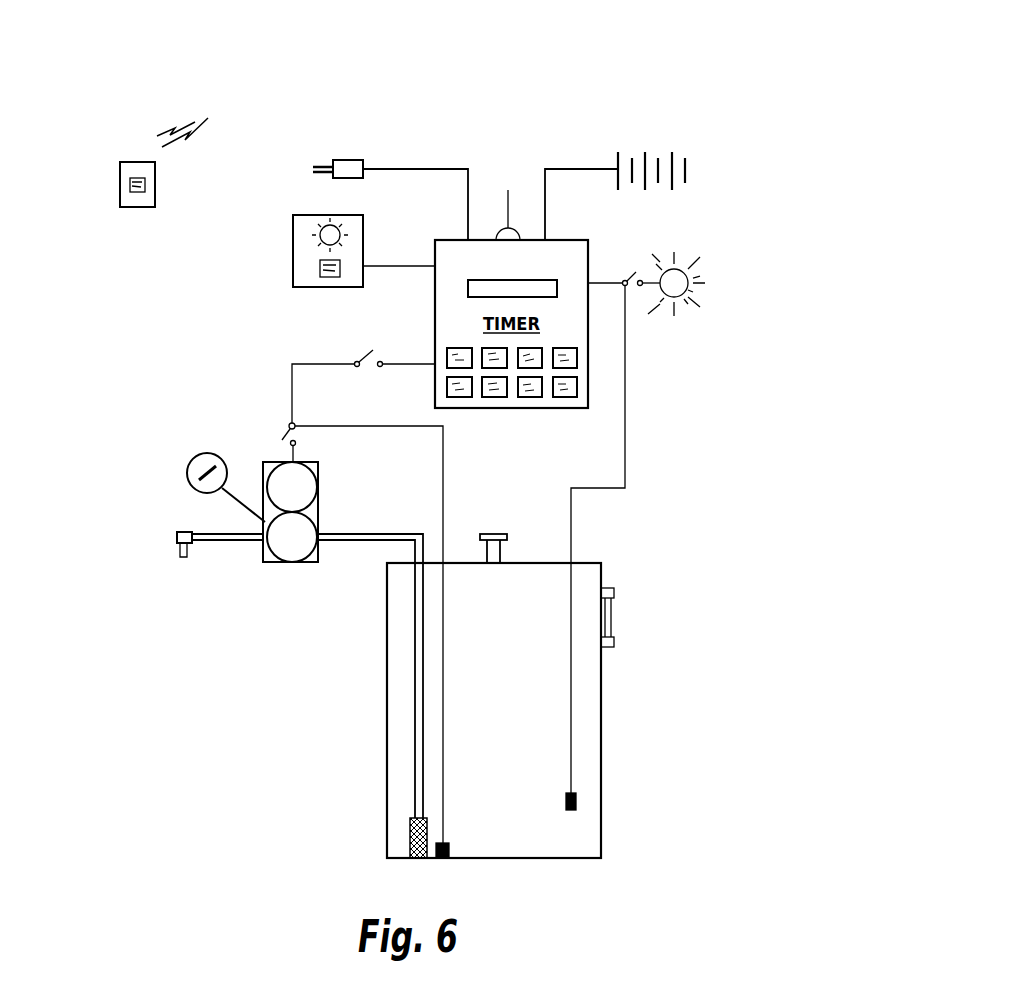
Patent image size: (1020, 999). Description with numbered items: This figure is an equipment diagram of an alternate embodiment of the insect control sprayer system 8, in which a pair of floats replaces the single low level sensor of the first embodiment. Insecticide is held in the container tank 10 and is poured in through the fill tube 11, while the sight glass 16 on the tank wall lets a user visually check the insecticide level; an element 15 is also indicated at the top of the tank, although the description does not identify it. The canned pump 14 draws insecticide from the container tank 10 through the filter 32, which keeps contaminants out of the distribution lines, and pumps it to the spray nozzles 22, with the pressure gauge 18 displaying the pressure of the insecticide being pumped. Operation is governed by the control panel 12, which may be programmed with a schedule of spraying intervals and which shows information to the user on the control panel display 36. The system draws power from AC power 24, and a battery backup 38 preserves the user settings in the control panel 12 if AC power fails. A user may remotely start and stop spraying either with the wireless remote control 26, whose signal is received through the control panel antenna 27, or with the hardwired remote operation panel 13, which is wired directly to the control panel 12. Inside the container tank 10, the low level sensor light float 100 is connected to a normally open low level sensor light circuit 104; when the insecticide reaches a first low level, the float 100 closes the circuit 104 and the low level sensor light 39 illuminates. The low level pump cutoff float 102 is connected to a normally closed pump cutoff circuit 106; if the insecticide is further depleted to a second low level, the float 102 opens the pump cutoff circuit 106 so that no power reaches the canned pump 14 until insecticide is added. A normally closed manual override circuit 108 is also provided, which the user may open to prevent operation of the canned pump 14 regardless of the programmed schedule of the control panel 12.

The insect control sprayer system 8 is at (553, 68).
The container tank 10 is at (515, 735).
The fill tube 11 is at (492, 534).
The control panel 12 is at (502, 408).
The hardwired remote operation panel 13 is at (285, 255).
The canned pump 14 is at (307, 526).
The tank lid 15 is at (508, 537).
The sight glass 16 is at (684, 617).
The pressure gauge 18 is at (210, 465).
The spray nozzles 22 is at (199, 584).
The AC power 24 is at (377, 188).
The wireless remote control 26 is at (102, 191).
The control panel antenna 27 is at (508, 190).
The filter 32 is at (406, 834).
The control panel display 36 is at (517, 276).
The battery backup 38 is at (640, 170).
The low level sensor light 39 is at (771, 284).
The low level sensor light float 100 is at (584, 797).
The low level pump cutoff float 102 is at (457, 847).
The low level sensor light circuit 104 is at (636, 272).
The pump cutoff circuit 106 is at (283, 417).
The manual override circuit 108 is at (357, 352).